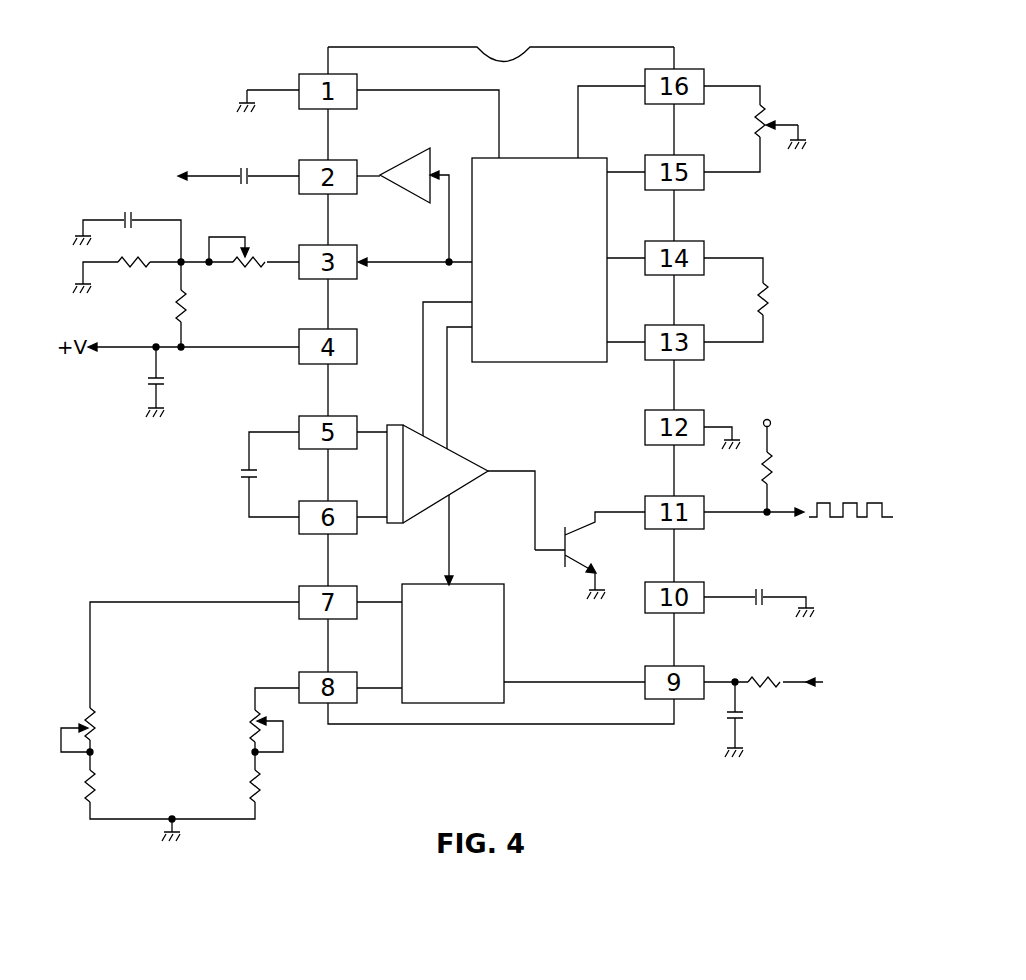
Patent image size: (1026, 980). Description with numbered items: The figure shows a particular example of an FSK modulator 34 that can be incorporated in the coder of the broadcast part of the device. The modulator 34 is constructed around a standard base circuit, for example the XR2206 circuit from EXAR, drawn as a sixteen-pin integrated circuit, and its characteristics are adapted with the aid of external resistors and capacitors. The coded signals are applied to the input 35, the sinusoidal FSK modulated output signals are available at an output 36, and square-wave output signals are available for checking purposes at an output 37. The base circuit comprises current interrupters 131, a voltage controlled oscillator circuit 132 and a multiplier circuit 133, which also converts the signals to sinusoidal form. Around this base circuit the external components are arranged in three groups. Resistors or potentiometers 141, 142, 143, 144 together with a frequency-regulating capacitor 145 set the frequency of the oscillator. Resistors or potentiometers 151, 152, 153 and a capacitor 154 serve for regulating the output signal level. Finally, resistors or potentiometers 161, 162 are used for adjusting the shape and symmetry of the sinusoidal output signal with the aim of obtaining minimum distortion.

The FSK modulator 34 is at (613, 43).
The input 35 is at (797, 681).
The output 36 is at (215, 174).
The output 37 is at (790, 516).
The current interrupters 131 is at (505, 642).
The voltage controlled oscillator circuit 132 is at (460, 452).
The multiplier circuit 133 is at (530, 362).
The resistor or potentiometer 141 is at (96, 792).
The resistor or potentiometer 142 is at (96, 734).
The resistor or potentiometer 143 is at (252, 782).
The resistor or potentiometer 144 is at (252, 725).
The frequency-regulating capacitor 145 is at (249, 492).
The resistor or potentiometer 151 is at (186, 305).
The resistor or potentiometer 152 is at (141, 285).
The resistor or potentiometer 153 is at (247, 266).
The capacitor 154 is at (122, 215).
The resistor or potentiometer 161 is at (767, 307).
The resistor or potentiometer 162 is at (762, 115).